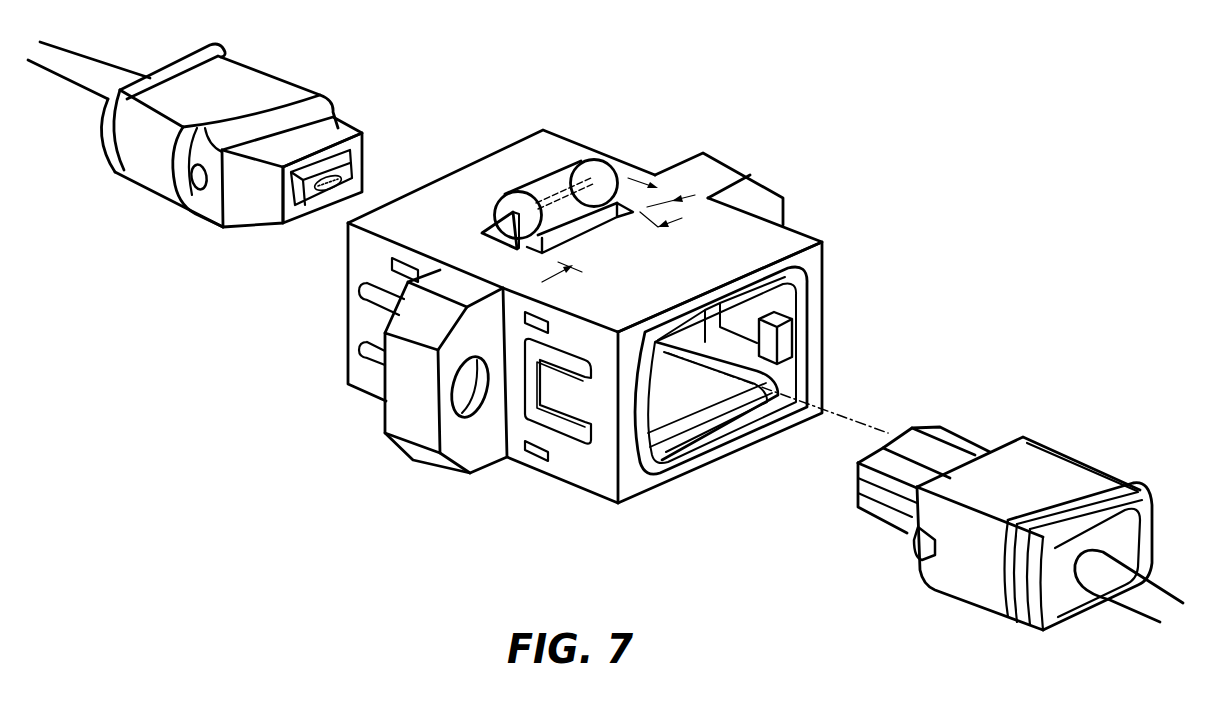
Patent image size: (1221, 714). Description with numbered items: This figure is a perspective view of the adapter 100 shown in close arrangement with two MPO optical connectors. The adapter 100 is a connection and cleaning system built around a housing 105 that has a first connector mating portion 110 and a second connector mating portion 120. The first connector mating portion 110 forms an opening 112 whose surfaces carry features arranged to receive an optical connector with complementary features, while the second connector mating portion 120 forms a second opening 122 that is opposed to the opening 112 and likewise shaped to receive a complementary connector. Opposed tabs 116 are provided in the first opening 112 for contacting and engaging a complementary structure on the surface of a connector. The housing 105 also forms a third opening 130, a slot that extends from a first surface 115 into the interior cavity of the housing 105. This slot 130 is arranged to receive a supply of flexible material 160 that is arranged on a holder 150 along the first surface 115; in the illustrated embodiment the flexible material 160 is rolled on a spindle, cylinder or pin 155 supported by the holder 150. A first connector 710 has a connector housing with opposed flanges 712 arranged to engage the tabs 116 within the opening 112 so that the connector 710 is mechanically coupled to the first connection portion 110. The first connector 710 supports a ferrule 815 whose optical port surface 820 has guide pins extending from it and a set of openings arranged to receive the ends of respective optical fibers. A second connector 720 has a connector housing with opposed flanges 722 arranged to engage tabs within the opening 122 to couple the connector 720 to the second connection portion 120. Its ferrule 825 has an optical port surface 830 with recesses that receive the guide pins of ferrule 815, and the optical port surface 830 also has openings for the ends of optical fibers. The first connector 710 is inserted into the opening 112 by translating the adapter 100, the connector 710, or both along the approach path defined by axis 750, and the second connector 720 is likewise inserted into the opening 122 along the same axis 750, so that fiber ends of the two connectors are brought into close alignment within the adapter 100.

The adapter 100 is at (590, 288).
The housing 105 is at (348, 338).
The first connector mating portion 110 is at (414, 479).
The opening 112 is at (419, 167).
The first surface 115 is at (699, 251).
The tabs 116 is at (788, 333).
The second connector mating portion 120 is at (752, 157).
The second opening 122 is at (769, 464).
The third opening 130 is at (521, 258).
The holder 150 is at (495, 214).
The spindle 155 is at (541, 193).
The supply of flexible material 160 is at (598, 170).
The first connector 710 is at (211, 144).
The flanges 712 is at (198, 188).
The second connector 720 is at (982, 495).
The flanges 722 is at (917, 540).
The axis 750 is at (706, 380).
The ferrule 815 is at (292, 197).
The optical port surface 820 is at (318, 172).
The ferrule 825 is at (844, 468).
The optical port surface 830 is at (886, 424).